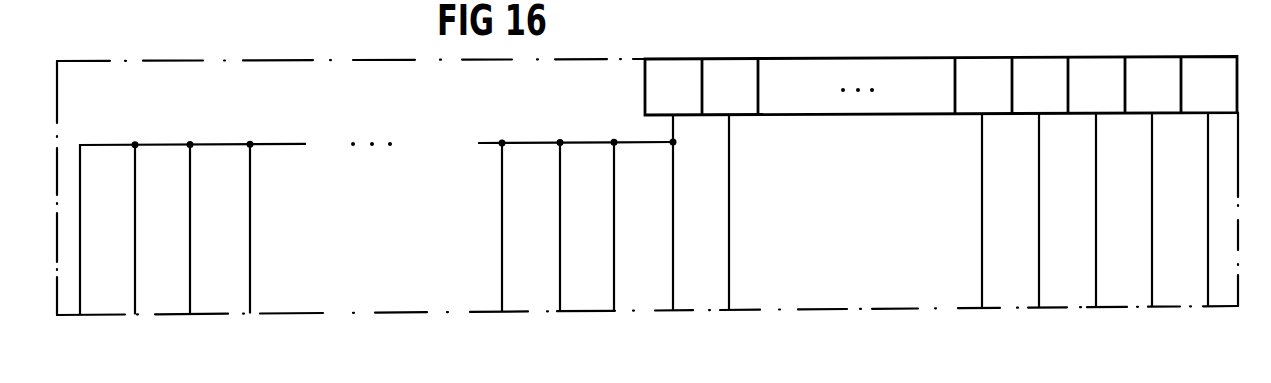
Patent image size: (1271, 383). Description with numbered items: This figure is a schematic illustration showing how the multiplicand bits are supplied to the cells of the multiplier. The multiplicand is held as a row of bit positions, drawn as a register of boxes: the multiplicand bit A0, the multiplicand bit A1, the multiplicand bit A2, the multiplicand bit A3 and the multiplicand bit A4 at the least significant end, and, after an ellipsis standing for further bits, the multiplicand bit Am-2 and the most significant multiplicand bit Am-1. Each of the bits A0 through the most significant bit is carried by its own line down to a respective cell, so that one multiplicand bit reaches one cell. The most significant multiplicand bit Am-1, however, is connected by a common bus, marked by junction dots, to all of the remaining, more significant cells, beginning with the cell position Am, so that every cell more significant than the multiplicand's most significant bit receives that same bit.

The multiplicand bit A0 is at (1201, 182).
The multiplicand bit A1 is at (1143, 182).
The multiplicand bit A2 is at (1087, 182).
The multiplicand bit A3 is at (1031, 183).
The multiplicand bit A4 is at (974, 183).
The most significant multiplicand bit Am-1 is at (674, 184).
The multiplicand bit Am-2 is at (730, 187).
The address line Am is at (640, 255).